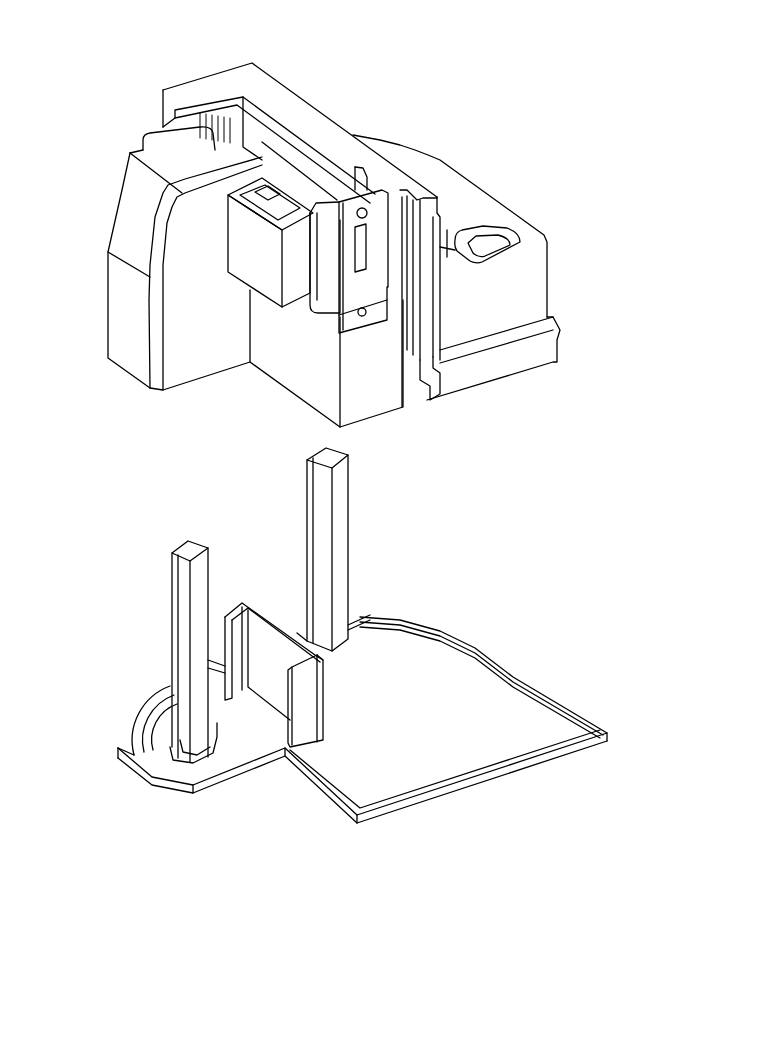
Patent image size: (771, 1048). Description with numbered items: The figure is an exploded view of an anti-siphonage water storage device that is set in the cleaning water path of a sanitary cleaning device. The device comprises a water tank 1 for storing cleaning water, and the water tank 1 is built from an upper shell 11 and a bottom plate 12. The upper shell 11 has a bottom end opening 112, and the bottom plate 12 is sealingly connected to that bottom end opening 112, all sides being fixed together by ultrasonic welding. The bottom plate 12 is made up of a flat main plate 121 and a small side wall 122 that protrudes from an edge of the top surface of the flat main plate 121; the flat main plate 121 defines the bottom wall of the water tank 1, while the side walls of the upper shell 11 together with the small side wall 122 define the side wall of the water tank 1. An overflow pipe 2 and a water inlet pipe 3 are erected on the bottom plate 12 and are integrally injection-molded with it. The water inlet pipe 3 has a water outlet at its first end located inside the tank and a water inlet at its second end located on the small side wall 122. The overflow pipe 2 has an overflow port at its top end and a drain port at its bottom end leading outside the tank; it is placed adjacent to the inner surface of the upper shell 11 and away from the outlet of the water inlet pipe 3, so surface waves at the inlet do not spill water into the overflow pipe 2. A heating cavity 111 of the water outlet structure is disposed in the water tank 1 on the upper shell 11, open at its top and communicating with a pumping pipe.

The water tank 1 is at (365, 496).
The upper shell 11 is at (347, 259).
The heating cavity 111 is at (349, 173).
The bottom end opening 112 is at (227, 280).
The bottom plate 12 is at (334, 710).
The flat main plate 121 is at (362, 738).
The small side wall 122 is at (126, 711).
The overflow pipe 2 is at (262, 549).
The water inlet pipe 3 is at (141, 651).